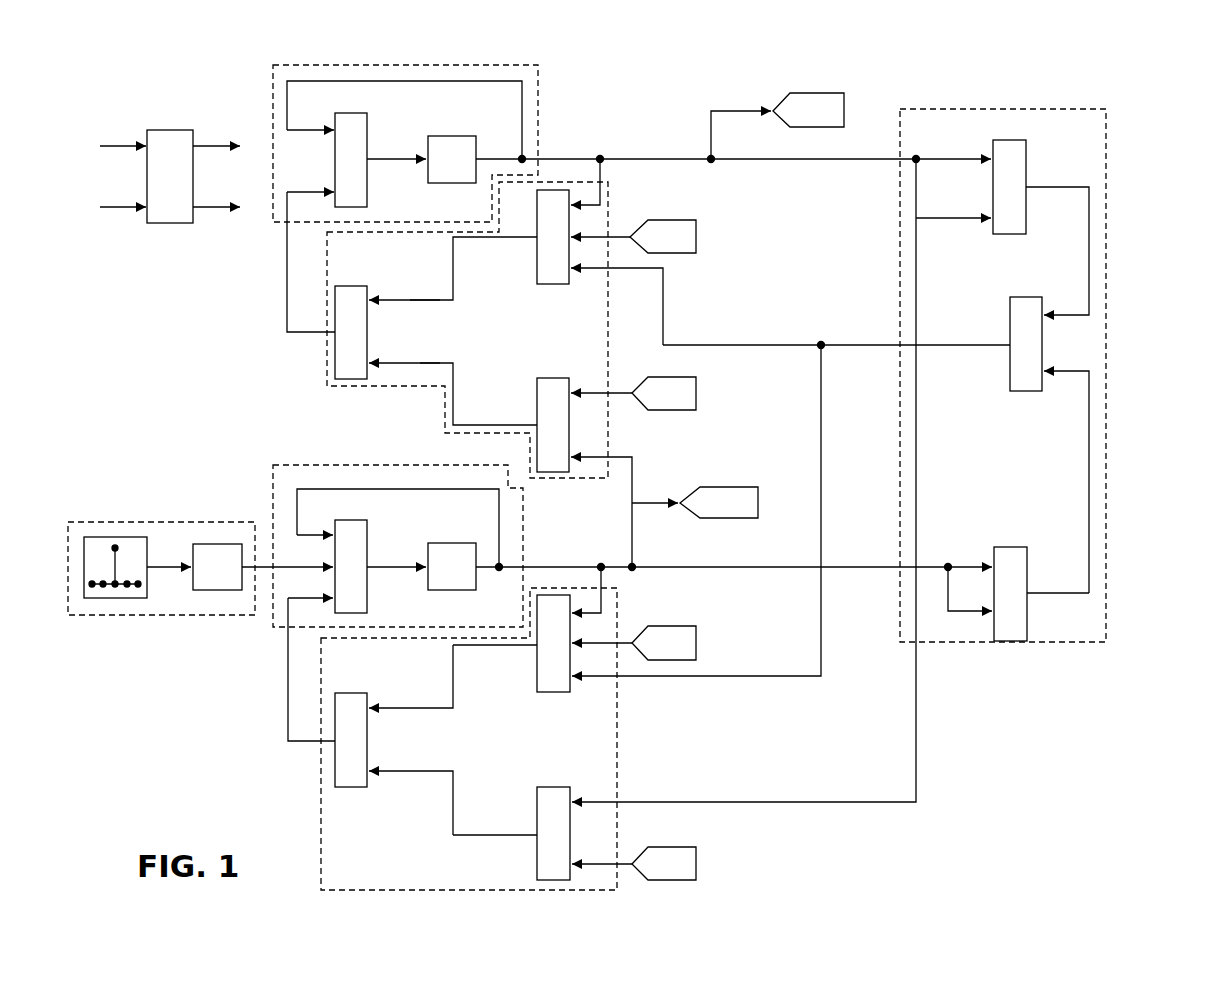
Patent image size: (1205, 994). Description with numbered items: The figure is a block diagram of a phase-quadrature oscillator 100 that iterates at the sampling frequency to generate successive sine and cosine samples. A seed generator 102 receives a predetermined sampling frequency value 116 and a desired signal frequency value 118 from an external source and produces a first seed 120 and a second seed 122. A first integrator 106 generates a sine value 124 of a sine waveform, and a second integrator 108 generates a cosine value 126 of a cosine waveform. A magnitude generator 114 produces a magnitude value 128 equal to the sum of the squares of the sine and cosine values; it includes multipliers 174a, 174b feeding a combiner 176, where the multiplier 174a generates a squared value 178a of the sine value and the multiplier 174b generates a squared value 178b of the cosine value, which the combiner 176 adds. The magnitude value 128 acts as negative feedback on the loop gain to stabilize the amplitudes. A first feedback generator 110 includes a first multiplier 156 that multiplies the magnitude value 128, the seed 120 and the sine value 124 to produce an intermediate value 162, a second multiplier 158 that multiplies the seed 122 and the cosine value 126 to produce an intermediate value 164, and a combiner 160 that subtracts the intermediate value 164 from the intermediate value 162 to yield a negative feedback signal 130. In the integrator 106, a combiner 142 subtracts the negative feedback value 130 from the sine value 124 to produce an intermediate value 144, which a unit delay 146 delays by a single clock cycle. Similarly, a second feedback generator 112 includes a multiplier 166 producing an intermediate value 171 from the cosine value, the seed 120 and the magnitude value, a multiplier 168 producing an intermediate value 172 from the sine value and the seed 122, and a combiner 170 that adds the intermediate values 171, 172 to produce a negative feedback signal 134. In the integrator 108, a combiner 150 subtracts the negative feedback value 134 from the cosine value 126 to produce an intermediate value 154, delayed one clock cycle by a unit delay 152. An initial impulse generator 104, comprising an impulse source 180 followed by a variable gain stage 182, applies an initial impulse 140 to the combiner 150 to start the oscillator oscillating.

The phase-quadrature oscillator 100 is at (1124, 86).
The seed generator 102 is at (168, 130).
The initial impulse generator 104 is at (196, 522).
The first integrator 106 is at (290, 64).
The second integrator 108 is at (306, 465).
The first feedback generator 110 is at (573, 182).
The second feedback generator 112 is at (346, 889).
The magnitude generator 114 is at (1038, 642).
The sampling frequency value 116 is at (121, 140).
The desired signal frequency value 118 is at (118, 212).
The first seed 120 is at (218, 140).
The second seed 122 is at (218, 212).
The sine value 124 is at (728, 111).
The cosine value 126 is at (651, 501).
The magnitude value 128 is at (820, 343).
The negative feedback signal 130 is at (290, 334).
The negative feedback signal 134 is at (289, 743).
The initial impulse 140 is at (264, 567).
The combiner 142 is at (352, 113).
The intermediate value 144 is at (390, 159).
The unit delay 146 is at (447, 136).
The combiner 150 is at (368, 533).
The unit delay 152 is at (453, 542).
The intermediate value 154 is at (394, 568).
The first multiplier 156 is at (558, 284).
The second multiplier 158 is at (554, 472).
The combiner 160 is at (354, 286).
The intermediate value 162 is at (416, 300).
The intermediate value 164 is at (433, 363).
The multiplier 166 is at (538, 692).
The multiplier 168 is at (562, 787).
The combiner 170 is at (354, 692).
The intermediate value 171 is at (412, 707).
The intermediate value 172 is at (416, 770).
The multiplier 174a is at (1004, 234).
The multiplier 174b is at (1004, 546).
The combiner 176 is at (1020, 392).
The squared value 178a is at (1064, 187).
The squared value 178b is at (1058, 592).
The impulse source 180 is at (118, 598).
The variable gain stage 182 is at (204, 590).